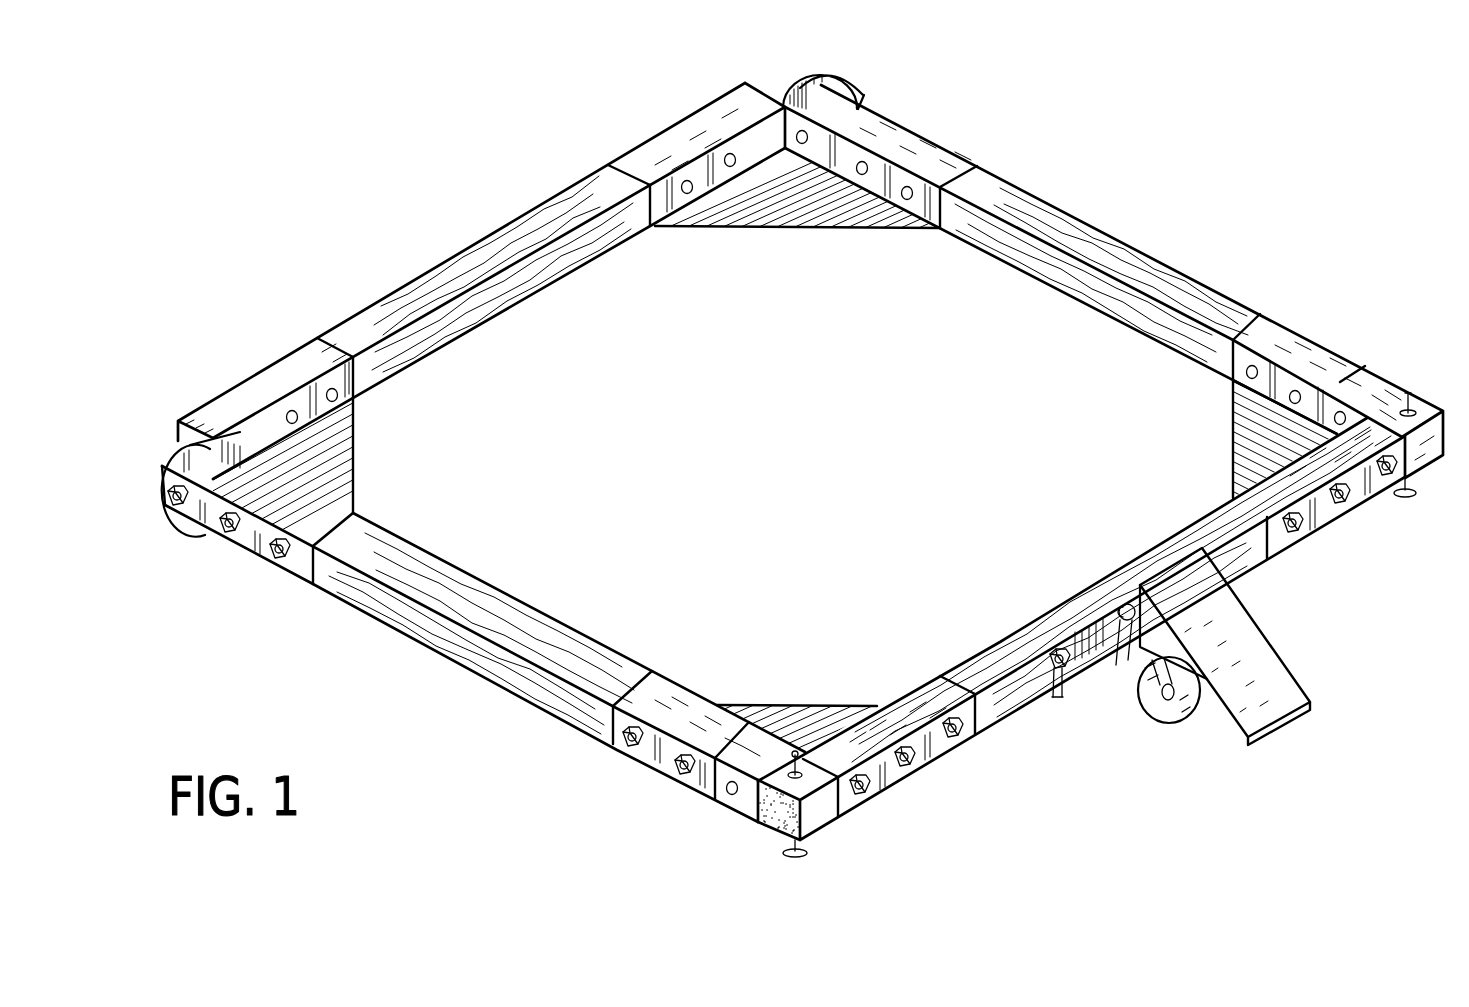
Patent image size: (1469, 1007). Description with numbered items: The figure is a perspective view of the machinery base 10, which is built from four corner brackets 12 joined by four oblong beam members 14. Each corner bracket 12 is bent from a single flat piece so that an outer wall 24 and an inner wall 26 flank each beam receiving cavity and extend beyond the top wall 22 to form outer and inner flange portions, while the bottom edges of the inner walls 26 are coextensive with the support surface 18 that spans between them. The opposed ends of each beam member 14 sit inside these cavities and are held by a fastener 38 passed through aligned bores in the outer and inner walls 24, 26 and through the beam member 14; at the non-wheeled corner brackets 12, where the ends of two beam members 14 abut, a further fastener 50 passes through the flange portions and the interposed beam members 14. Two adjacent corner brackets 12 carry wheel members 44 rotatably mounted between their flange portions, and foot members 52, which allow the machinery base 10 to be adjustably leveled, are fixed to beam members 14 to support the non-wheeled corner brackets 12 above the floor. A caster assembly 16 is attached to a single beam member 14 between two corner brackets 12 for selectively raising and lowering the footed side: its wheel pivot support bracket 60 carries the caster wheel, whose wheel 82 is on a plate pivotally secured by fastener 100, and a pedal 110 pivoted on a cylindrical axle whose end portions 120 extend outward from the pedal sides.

The machinery base 10 is at (1268, 84).
The corner bracket 12 is at (900, 137).
The beam member 14 is at (510, 242).
The caster assembly 16 is at (1238, 673).
The support surface 18 is at (772, 180).
The top wall 22 is at (1272, 342).
The outer wall 24 is at (657, 750).
The inner wall 26 is at (1340, 352).
The fastener 38 is at (652, 789).
The wheel member 44 is at (832, 74).
The fastener 50 is at (1302, 530).
The foot member 52 is at (808, 850).
The wheel pivot support bracket 60 is at (1067, 680).
The wheel 82 is at (1182, 715).
The fastener 100 is at (1052, 699).
The pedal 110 is at (1265, 685).
The end portion 120 is at (1116, 665).